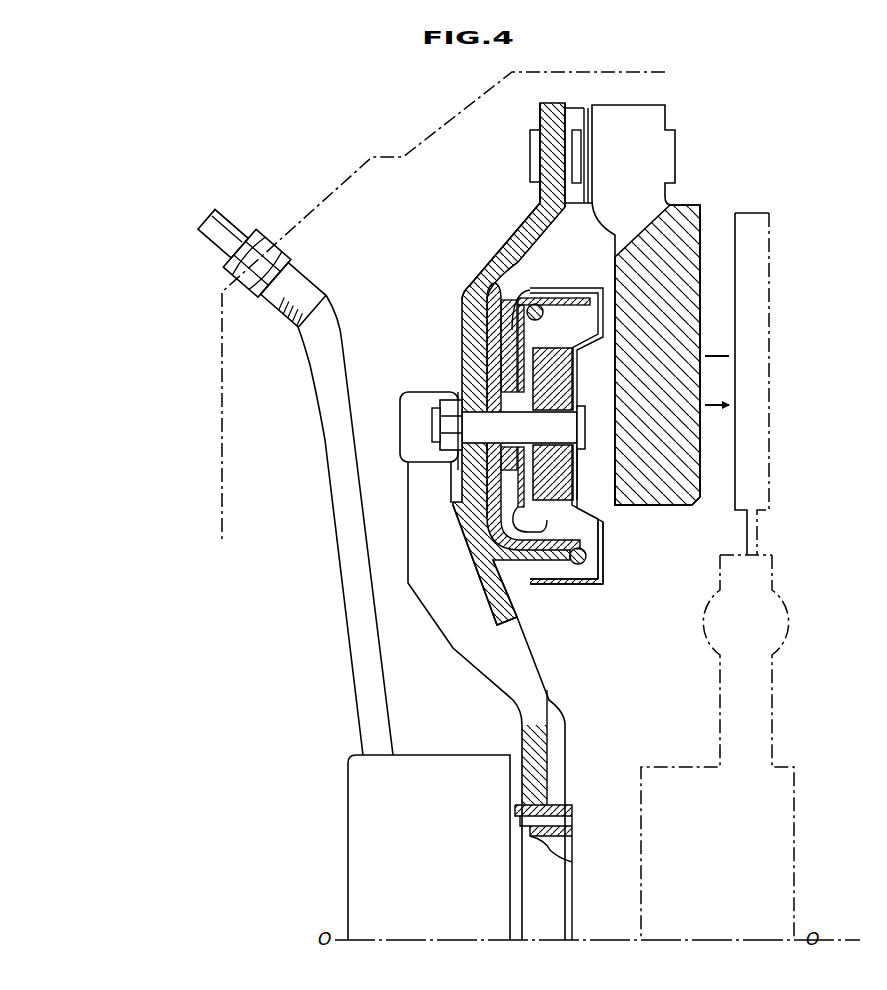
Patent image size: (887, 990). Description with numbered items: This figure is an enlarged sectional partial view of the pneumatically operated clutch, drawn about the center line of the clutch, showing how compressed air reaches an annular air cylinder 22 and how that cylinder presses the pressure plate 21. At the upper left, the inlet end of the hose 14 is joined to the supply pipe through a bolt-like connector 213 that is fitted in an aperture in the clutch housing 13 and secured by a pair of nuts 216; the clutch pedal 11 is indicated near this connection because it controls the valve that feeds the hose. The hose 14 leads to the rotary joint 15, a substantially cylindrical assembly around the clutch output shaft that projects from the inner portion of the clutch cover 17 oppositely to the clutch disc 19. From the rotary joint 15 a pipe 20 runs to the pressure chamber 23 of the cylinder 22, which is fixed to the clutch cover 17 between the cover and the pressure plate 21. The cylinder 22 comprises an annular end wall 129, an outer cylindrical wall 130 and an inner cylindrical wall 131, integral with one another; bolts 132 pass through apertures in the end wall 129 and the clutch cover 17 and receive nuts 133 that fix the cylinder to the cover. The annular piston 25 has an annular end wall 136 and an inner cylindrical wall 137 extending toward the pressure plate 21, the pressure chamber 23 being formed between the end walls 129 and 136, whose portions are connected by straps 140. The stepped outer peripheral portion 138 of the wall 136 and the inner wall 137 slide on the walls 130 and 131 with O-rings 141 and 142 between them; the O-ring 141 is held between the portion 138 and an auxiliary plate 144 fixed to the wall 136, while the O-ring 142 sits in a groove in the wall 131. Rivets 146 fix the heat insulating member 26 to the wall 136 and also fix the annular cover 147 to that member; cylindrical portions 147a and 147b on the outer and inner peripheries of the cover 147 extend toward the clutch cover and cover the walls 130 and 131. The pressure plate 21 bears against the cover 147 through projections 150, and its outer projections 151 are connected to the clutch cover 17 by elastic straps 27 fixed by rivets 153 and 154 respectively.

The clutch pedal 11 is at (272, 234).
The clutch housing 13 is at (316, 210).
The hose 14 is at (332, 470).
The rotary joint 15 is at (348, 757).
The clutch cover 17 is at (478, 612).
The clutch disc 19 is at (751, 210).
The pipe 20 is at (408, 545).
The pressure plate 21 is at (692, 507).
The annular air cylinder 22 is at (489, 360).
The pressure chamber 23 is at (470, 350).
The annular piston 25 is at (545, 372).
The heat insulating member 26 is at (579, 462).
The elastic straps 27 is at (585, 137).
The annular end wall 129 is at (478, 366).
The outer cylindrical wall 130 is at (500, 288).
The inner cylindrical wall 131 is at (600, 572).
The bolts 132 is at (445, 465).
The nuts 133 is at (440, 445).
The annular end wall 136 is at (548, 470).
The inner cylindrical wall 137 is at (537, 519).
The outer peripheral portion 138 is at (540, 314).
The straps 140 is at (500, 385).
The O-ring 141 is at (540, 298).
The O-ring 142 is at (577, 565).
The auxiliary plate 144 is at (512, 300).
The rivets 146 is at (562, 428).
The annular cover 147 is at (602, 502).
The cylindrical portion 147a is at (538, 292).
The cylindrical portion 147b is at (556, 586).
The projections 150 is at (640, 497).
The projections 151 is at (645, 183).
The rivets 153 is at (556, 170).
The rivets 154 is at (532, 168).
The bolt-like connector 213 is at (240, 237).
The nuts 216 is at (272, 245).